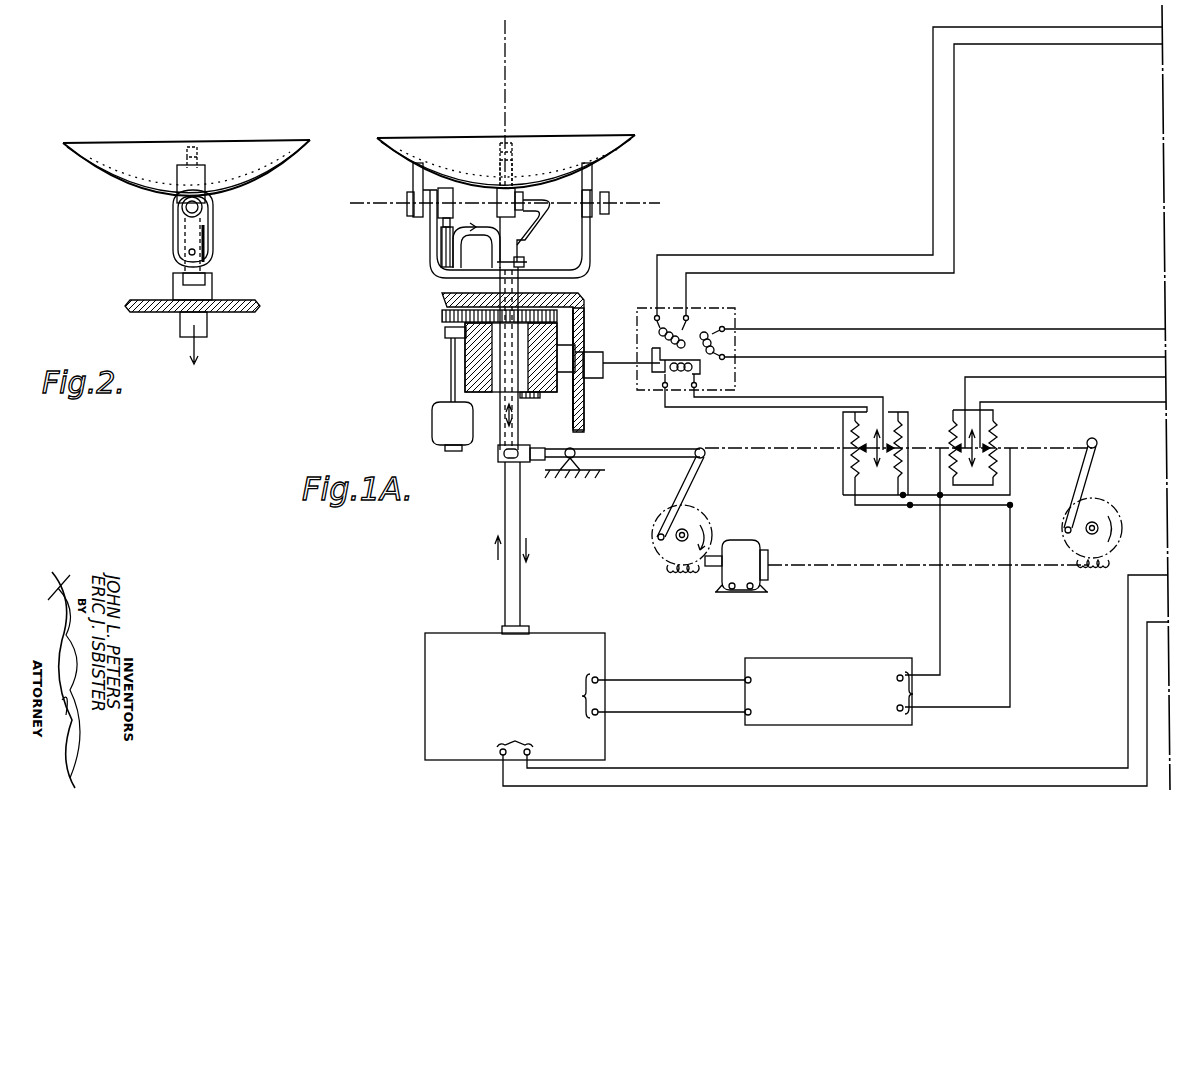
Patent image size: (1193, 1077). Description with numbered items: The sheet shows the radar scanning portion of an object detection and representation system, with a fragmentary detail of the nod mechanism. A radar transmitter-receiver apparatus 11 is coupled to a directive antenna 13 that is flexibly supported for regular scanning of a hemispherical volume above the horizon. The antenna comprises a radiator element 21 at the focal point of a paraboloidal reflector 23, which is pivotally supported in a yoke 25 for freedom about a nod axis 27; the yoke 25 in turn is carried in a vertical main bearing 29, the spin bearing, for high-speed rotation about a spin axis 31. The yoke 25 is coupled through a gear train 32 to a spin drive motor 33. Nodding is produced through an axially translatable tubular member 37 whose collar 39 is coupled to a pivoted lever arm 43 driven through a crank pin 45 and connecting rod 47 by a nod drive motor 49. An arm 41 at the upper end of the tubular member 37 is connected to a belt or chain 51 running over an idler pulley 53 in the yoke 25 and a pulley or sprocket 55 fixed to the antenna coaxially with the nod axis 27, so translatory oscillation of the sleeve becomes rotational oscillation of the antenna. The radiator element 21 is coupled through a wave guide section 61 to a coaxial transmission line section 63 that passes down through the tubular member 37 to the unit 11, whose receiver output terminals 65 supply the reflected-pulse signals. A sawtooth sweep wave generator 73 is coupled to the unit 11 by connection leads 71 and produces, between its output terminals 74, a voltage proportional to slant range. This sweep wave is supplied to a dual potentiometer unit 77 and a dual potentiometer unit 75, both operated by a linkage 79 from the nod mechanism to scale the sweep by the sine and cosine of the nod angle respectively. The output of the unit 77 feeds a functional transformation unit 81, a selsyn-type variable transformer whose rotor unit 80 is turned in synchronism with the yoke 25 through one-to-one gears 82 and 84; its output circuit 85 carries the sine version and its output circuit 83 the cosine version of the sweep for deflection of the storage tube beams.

In FIG. 1A, the radar transmitter-receiver apparatus 11 is at (463, 624).
In FIG. 1A, the directive antenna 13 is at (598, 232).
In FIG. 2, the radiator element 21 is at (200, 153).
In FIG. 1A, the radiator element 21 is at (516, 135).
In FIG. 2, the paraboloidal reflector 23 is at (130, 143).
In FIG. 1A, the paraboloidal reflector 23 is at (628, 150).
In FIG. 1A, the yoke 25 is at (437, 243).
In FIG. 1A, the nod axis 27 is at (388, 200).
In FIG. 1A, the vertical main bearing 29 is at (465, 358).
In FIG. 1A, the spin axis 31 is at (508, 78).
In FIG. 1A, the gear train 32 is at (442, 316).
In FIG. 1A, the spin drive motor 33 is at (434, 424).
In FIG. 2, the axially translatable tubular member 37 is at (207, 272).
In FIG. 1A, the axially translatable tubular member 37 is at (525, 257).
In FIG. 1A, the collar 39 is at (490, 470).
In FIG. 2, the arm 41 is at (183, 253).
In FIG. 1A, the arm 41 is at (476, 235).
In FIG. 1A, the pivoted lever arm 43 is at (576, 475).
In FIG. 1A, the crank pin 45 is at (655, 540).
In FIG. 1A, the connecting rod 47 is at (688, 485).
In FIG. 1A, the nod drive motor 49 is at (757, 548).
In FIG. 2, the belt or chain 51 is at (172, 236).
In FIG. 1A, the belt or chain 51 is at (440, 212).
In FIG. 2, the idler pulley 53 is at (205, 248).
In FIG. 1A, the idler pulley 53 is at (441, 262).
In FIG. 2, the pulley or sprocket 55 is at (203, 207).
In FIG. 1A, the pulley or sprocket 55 is at (496, 204).
In FIG. 1A, the wave guide section 61 is at (514, 172).
In FIG. 1A, the coaxial transmission line section 63 is at (542, 226).
In FIG. 1A, the receiver output terminals 65 is at (832, 680).
In FIG. 1A, the connection leads 71 is at (605, 703).
In FIG. 1A, the sawtooth sweep wave generator 73 is at (820, 737).
In FIG. 1A, the generator output terminals 74 is at (914, 697).
In FIG. 1A, the dual potentiometer unit 75 is at (993, 474).
In FIG. 1A, the dual potentiometer unit 77 is at (853, 462).
In FIG. 1A, the linkage 79 is at (1070, 445).
In FIG. 1A, the rotor unit 80 is at (705, 372).
In FIG. 1A, the functional transformation unit 81 is at (745, 312).
In FIG. 1A, the gear 82 is at (584, 340).
In FIG. 1A, the output circuit 83 is at (690, 312).
In FIG. 2, the gear 84 is at (232, 312).
In FIG. 1A, the gear 84 is at (588, 293).
In FIG. 1A, the output circuit 85 is at (722, 345).